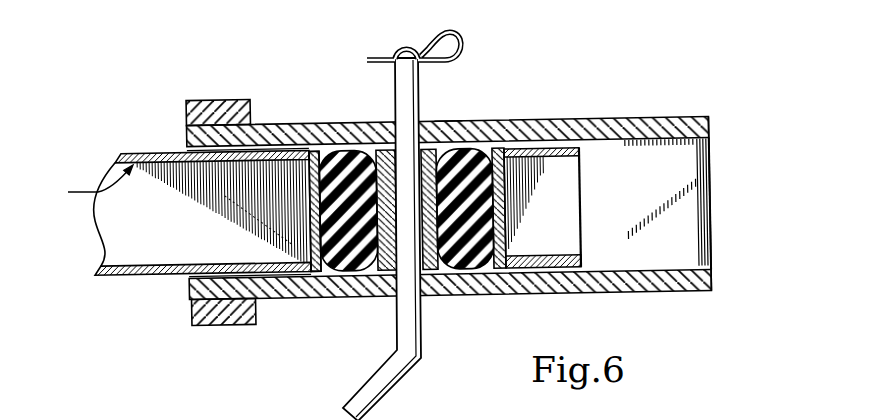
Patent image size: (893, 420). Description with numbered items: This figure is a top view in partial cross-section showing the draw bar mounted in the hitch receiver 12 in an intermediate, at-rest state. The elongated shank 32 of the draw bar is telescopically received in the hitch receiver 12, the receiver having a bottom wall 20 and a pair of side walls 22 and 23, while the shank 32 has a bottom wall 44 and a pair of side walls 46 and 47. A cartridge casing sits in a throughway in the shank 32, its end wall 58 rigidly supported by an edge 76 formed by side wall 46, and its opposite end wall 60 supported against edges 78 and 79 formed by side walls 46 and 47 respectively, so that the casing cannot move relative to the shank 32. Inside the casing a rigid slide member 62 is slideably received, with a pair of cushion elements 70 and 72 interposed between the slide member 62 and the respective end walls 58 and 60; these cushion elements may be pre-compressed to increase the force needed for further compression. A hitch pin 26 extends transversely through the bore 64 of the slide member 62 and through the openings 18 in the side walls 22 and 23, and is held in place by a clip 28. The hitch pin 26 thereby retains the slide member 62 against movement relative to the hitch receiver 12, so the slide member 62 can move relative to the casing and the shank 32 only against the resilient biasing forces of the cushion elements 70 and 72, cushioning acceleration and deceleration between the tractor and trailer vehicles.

The hitch receiver 12 is at (684, 118).
The bore 18 is at (420, 121).
The bottom wall 20 is at (683, 172).
The side wall 22 is at (454, 295).
The side wall 23 is at (450, 122).
The hitch pin 26 is at (407, 78).
The clip 28 is at (462, 34).
The shank 32 is at (85, 184).
The bottom wall 44 is at (158, 255).
The side wall 46 is at (118, 275).
The side wall 47 is at (153, 153).
The end wall 58 is at (508, 245).
The end wall 60 is at (313, 233).
The slide member 62 is at (384, 140).
The bore 64 is at (430, 280).
The cushion element 70 is at (468, 150).
The cushion element 72 is at (343, 297).
The edge 76 is at (516, 295).
The edge 78 is at (312, 297).
The edge 79 is at (307, 185).